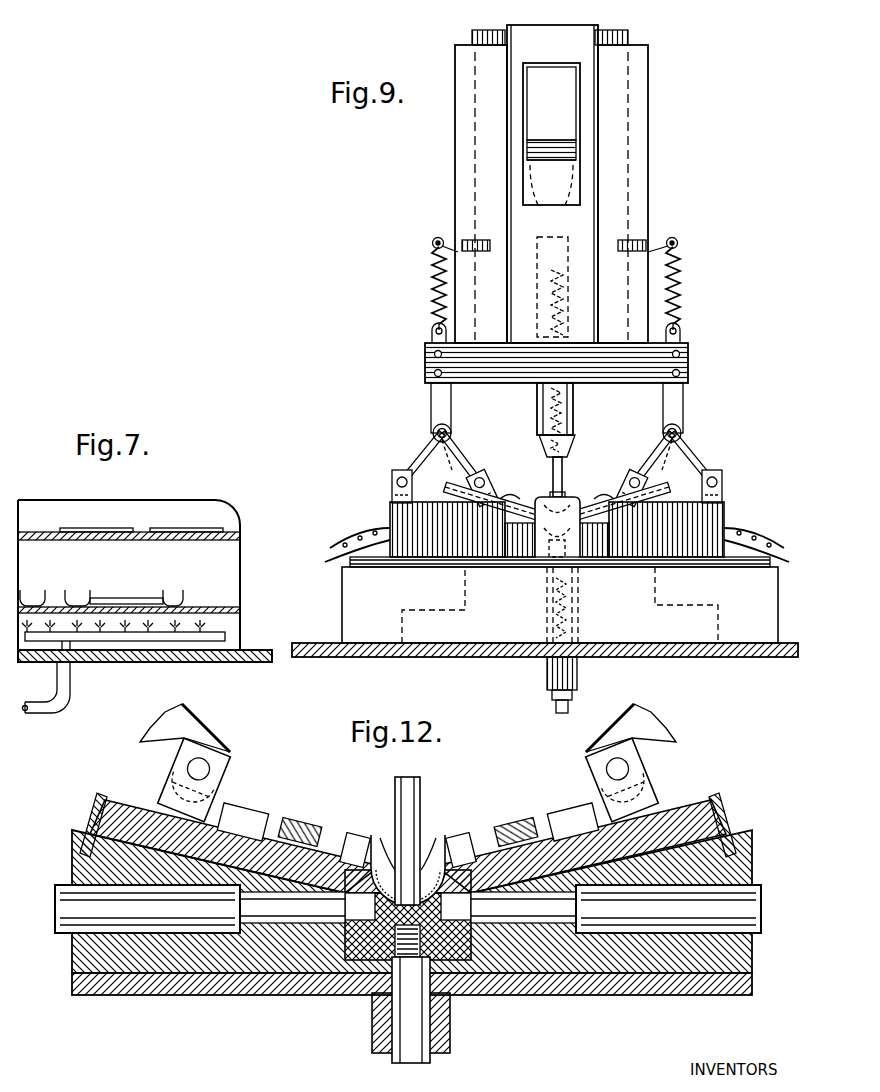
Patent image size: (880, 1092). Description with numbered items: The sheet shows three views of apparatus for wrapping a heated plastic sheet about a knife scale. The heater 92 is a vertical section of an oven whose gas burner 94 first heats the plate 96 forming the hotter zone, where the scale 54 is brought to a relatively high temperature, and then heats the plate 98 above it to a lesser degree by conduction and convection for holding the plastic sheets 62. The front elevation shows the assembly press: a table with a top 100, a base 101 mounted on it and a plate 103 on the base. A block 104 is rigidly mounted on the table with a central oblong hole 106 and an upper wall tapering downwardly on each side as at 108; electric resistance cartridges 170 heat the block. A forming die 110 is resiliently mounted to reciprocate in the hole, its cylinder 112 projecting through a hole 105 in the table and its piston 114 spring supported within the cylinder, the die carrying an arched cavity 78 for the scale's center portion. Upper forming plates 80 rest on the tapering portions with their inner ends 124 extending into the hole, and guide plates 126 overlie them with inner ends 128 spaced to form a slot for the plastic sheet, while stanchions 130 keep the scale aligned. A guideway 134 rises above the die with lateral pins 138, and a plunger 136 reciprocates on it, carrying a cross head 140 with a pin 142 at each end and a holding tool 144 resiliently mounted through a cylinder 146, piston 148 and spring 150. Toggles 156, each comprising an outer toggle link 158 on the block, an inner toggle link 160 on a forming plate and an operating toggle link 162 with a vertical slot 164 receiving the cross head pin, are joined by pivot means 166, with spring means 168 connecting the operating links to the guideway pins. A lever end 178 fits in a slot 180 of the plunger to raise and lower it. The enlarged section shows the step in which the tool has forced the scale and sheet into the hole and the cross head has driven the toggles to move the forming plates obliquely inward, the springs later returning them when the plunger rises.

In FIG. 7, the scale 54 is at (110, 600).
In FIG. 12, the scale 54 is at (427, 845).
In FIG. 7, the plastic sheet 62 is at (180, 530).
In FIG. 12, the plastic sheet 62 is at (375, 857).
In FIG. 12, the arched cavity 78 is at (372, 930).
In FIG. 9, the upper forming plates 80 is at (525, 508).
In FIG. 12, the upper forming plates 80 is at (313, 835).
In FIG. 7, the heater 92 is at (242, 626).
In FIG. 7, the gas burner 94 is at (108, 642).
In FIG. 7, the plate 96 is at (220, 607).
In FIG. 7, the plate 98 is at (213, 541).
In FIG. 9, the table top 100 is at (660, 651).
In FIG. 9, the base 101 is at (740, 619).
In FIG. 9, the plate 103 is at (633, 562).
In FIG. 12, the plate 103 is at (170, 993).
In FIG. 9, the block 104 is at (728, 546).
In FIG. 12, the block 104 is at (752, 936).
In FIG. 9, the hole 105 is at (560, 605).
In FIG. 12, the oblong hole 106 is at (352, 908).
In FIG. 9, the tapering portions 108 is at (485, 526).
In FIG. 12, the tapering portions 108 is at (222, 826).
In FIG. 9, the forming die 110 is at (535, 556).
In FIG. 12, the forming die 110 is at (350, 997).
In FIG. 9, the cylinder 112 is at (577, 669).
In FIG. 12, the cylinder 112 is at (452, 1010).
In FIG. 12, the piston 114 is at (385, 1050).
In FIG. 12, the inner vertically extending ends 124 is at (330, 840).
In FIG. 9, the guide plates 126 is at (497, 487).
In FIG. 12, the guide plates 126 is at (277, 817).
In FIG. 12, the inner ends 128 is at (360, 832).
In FIG. 9, the stanchions 130 is at (570, 541).
In FIG. 9, the guideway 134 is at (640, 149).
In FIG. 9, the plunger 136 is at (583, 215).
In FIG. 9, the pins 138 is at (435, 242).
In FIG. 9, the cross head 140 is at (690, 371).
In FIG. 9, the pin 142 is at (432, 338).
In FIG. 9, the holding tool 144 is at (562, 495).
In FIG. 12, the holding tool 144 is at (423, 835).
In FIG. 9, the cylinder 146 is at (537, 399).
In FIG. 9, the piston 148 is at (560, 449).
In FIG. 9, the spring 150 is at (568, 322).
In FIG. 9, the toggles 156 is at (425, 435).
In FIG. 9, the outer toggle link 158 is at (422, 459).
In FIG. 9, the inner toggle link 160 is at (457, 443).
In FIG. 12, the inner toggle link 160 is at (150, 750).
In FIG. 9, the operating toggle link 162 is at (433, 398).
In FIG. 9, the vertical slot 164 is at (432, 355).
In FIG. 9, the pivot means 166 is at (440, 430).
In FIG. 9, the spring means 168 is at (430, 273).
In FIG. 9, the electric resistance cartridges 170 is at (388, 528).
In FIG. 12, the electric resistance cartridges 170 is at (90, 910).
In FIG. 9, the lever end 178 is at (563, 128).
In FIG. 9, the slot 180 is at (583, 102).